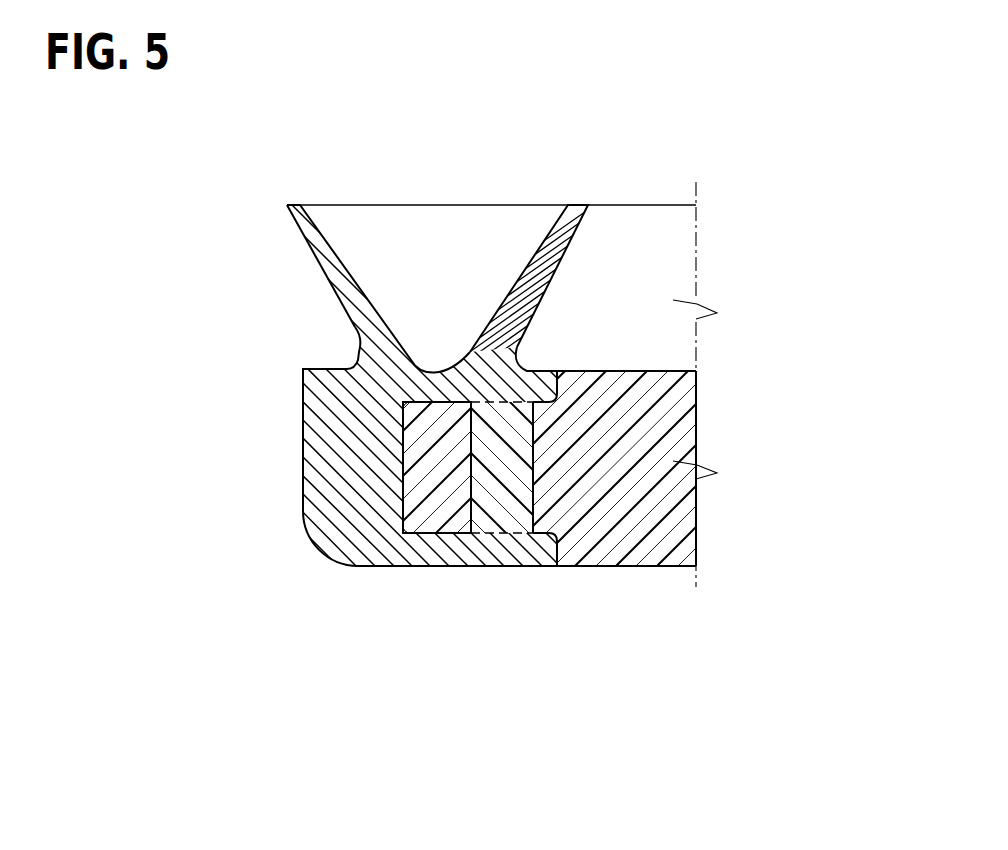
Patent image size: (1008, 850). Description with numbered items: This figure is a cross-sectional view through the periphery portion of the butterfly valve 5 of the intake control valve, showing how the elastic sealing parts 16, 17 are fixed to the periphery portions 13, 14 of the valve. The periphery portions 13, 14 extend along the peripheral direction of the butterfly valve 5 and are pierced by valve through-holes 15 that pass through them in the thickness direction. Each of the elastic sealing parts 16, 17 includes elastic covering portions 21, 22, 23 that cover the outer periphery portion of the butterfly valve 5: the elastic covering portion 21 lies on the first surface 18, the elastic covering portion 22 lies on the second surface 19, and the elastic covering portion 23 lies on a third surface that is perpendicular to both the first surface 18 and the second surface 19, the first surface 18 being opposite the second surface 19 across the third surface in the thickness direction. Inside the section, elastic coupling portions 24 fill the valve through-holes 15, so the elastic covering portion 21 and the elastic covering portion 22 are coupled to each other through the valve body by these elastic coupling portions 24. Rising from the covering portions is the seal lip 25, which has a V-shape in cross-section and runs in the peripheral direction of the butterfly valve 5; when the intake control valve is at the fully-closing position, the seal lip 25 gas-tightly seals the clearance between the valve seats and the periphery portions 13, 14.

The elastic sealing part 16 is at (318, 153).
The elastic sealing part 17 is at (422, 385).
The seal lip 25 is at (546, 242).
The elastic covering portion 22 is at (520, 363).
The elastic covering portion 23 is at (315, 458).
The elastic covering portion 21 is at (413, 555).
The periphery portion 13 is at (447, 502).
The periphery portion 14 is at (437, 464).
The elastic coupling portion 24 is at (487, 498).
The valve through-hole 15 is at (522, 512).
The butterfly valve 5 is at (627, 548).
The second surface 19 is at (625, 371).
The first surface 18 is at (658, 567).